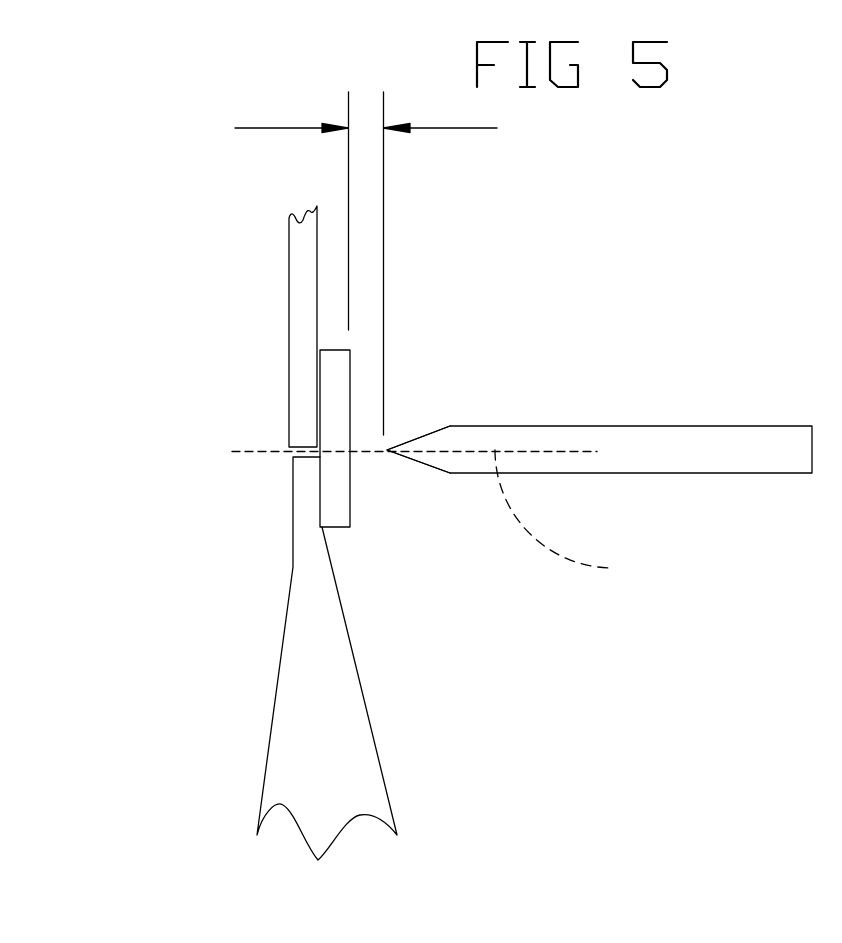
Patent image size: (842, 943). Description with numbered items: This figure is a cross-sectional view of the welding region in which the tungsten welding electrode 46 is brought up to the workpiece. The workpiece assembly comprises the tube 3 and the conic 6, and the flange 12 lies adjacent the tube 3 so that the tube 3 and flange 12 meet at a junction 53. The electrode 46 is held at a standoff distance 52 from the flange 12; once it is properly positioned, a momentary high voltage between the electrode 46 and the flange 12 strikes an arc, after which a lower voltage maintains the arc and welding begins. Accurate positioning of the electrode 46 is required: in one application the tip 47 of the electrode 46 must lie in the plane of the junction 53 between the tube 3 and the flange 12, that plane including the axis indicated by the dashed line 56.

The tube 3 is at (289, 333).
The conic 6 is at (365, 697).
The flange 12 is at (350, 483).
The tungsten welding electrode 46 is at (698, 426).
The tip 47 is at (387, 450).
The standoff distance 52 is at (369, 263).
The junction 53 is at (282, 462).
The dashed line 56 is at (585, 520).